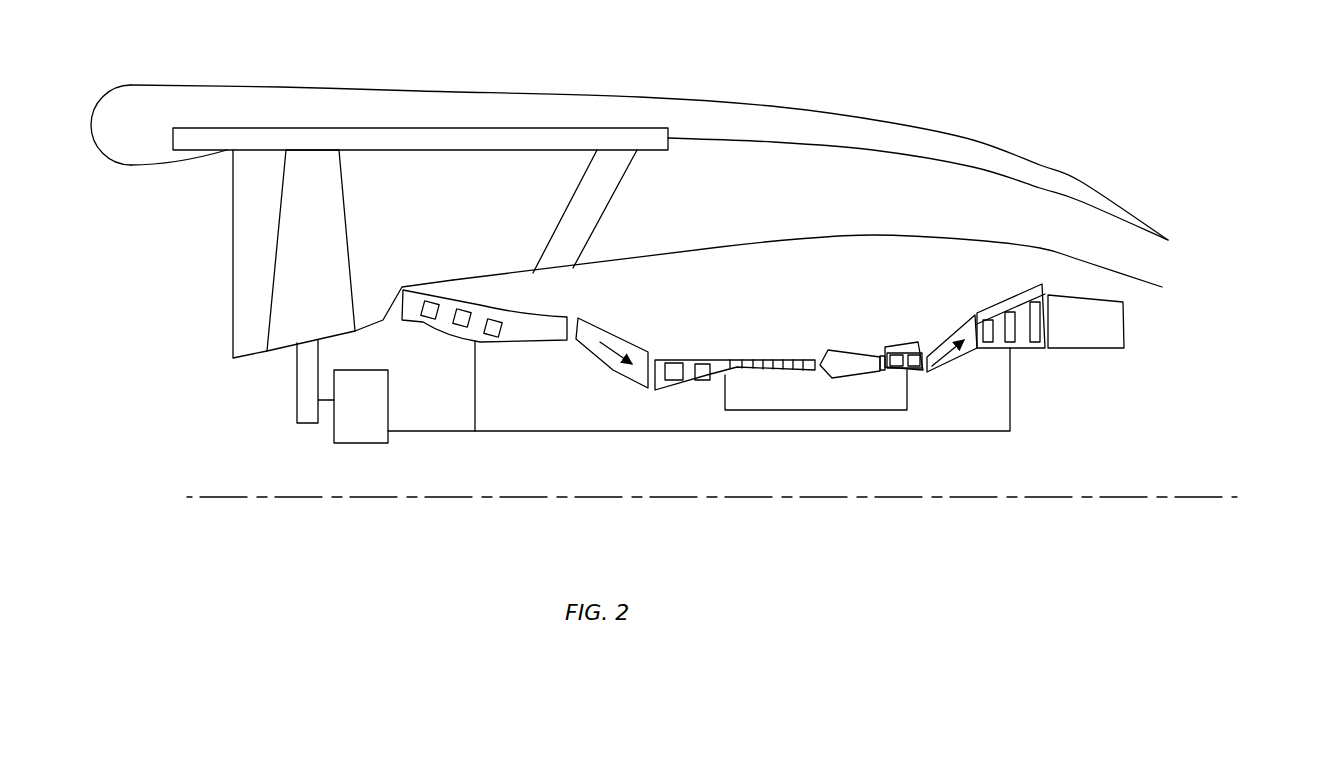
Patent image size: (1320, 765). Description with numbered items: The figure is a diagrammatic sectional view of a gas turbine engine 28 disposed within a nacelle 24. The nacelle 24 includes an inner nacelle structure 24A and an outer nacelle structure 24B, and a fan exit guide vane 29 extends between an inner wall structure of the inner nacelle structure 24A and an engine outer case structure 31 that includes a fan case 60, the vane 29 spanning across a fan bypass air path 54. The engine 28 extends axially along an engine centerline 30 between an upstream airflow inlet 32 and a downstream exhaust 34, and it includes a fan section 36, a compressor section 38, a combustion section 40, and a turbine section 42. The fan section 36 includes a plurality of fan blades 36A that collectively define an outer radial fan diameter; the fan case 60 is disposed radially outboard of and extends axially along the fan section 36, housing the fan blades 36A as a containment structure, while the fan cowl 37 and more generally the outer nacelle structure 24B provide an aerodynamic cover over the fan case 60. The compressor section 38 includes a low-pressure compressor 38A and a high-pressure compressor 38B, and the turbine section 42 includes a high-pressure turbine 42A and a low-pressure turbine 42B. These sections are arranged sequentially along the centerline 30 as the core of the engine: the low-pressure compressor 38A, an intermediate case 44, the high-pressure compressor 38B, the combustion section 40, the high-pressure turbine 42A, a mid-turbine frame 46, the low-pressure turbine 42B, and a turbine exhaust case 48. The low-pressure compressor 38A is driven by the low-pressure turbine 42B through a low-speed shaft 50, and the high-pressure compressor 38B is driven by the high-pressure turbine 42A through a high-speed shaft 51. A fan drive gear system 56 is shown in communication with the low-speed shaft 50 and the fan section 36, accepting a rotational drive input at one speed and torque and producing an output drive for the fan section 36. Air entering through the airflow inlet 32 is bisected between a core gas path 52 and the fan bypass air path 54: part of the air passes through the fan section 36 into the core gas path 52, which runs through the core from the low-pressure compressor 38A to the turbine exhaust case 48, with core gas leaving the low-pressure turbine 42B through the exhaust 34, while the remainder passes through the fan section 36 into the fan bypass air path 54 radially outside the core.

The nacelle 24 is at (629, 165).
The inner nacelle structure 24A is at (865, 235).
The outer nacelle structure 24B is at (887, 122).
The gas turbine engine 28 is at (1197, 353).
The fan exit guide vane 29 is at (587, 210).
The engine centerline 30 is at (1187, 497).
The engine outer case structure 31 is at (410, 127).
The airflow inlet 32 is at (155, 234).
The exhaust 34 is at (1145, 325).
The fan section 36 is at (242, 254).
The fan blades 36A is at (311, 250).
The fan cowl 37 is at (247, 85).
The compressor section 38 is at (715, 372).
The low-pressure compressor 38A is at (463, 330).
The high-pressure compressor 38B is at (735, 360).
The combustion section 40 is at (850, 345).
The turbine section 42 is at (952, 347).
The high-pressure turbine 42A is at (907, 347).
The low-pressure turbine 42B is at (1008, 290).
The intermediate case 44 is at (608, 332).
The mid-turbine frame 46 is at (945, 355).
The turbine exhaust case 48 is at (1077, 328).
The low-speed shaft 50 is at (716, 347).
The high-speed shaft 51 is at (822, 408).
The core gas path 52 is at (610, 352).
The fan bypass air path 54 is at (475, 217).
The fan drive gear system 56 is at (357, 443).
The fan case 60 is at (318, 128).